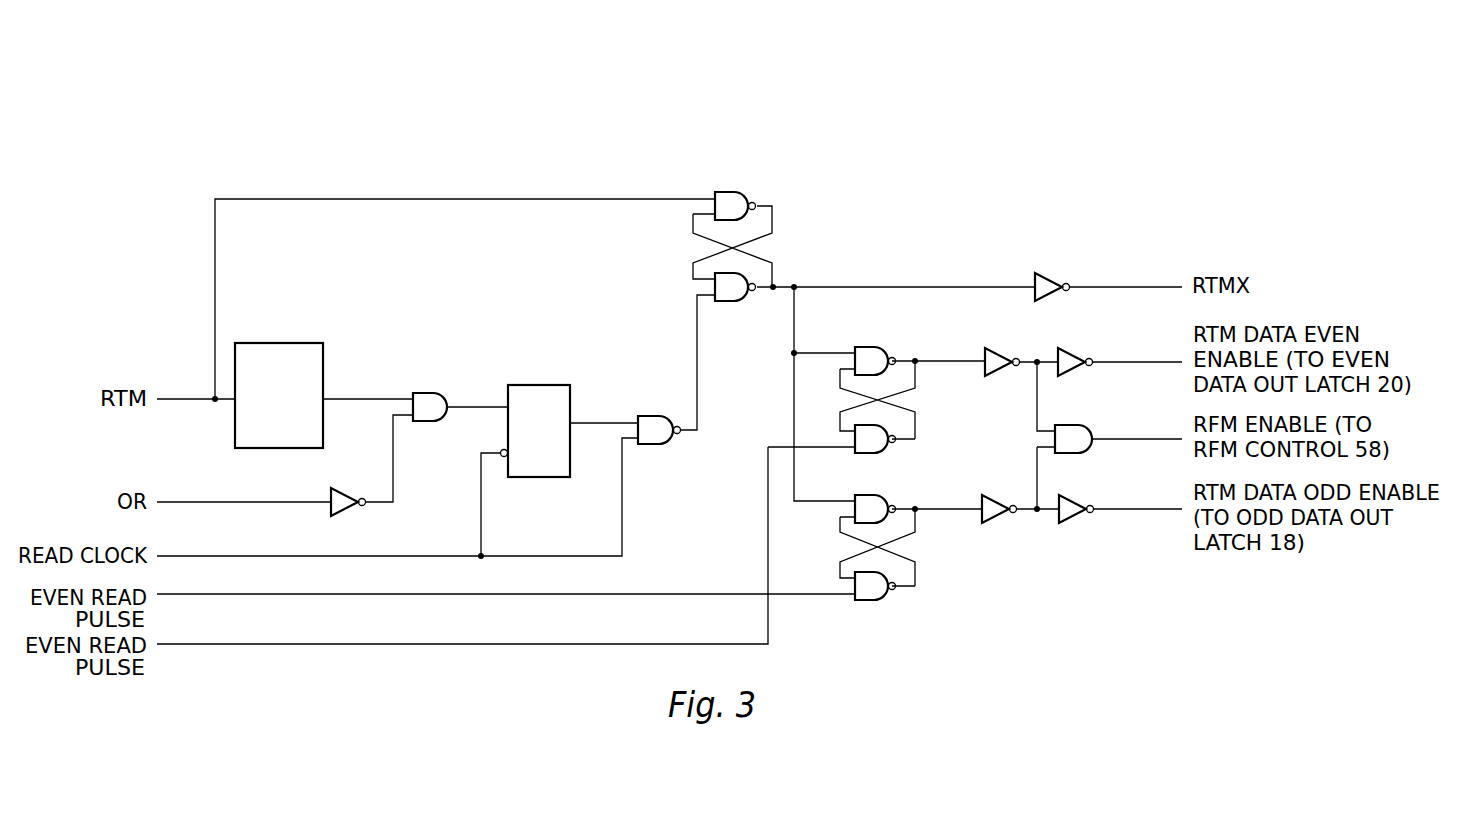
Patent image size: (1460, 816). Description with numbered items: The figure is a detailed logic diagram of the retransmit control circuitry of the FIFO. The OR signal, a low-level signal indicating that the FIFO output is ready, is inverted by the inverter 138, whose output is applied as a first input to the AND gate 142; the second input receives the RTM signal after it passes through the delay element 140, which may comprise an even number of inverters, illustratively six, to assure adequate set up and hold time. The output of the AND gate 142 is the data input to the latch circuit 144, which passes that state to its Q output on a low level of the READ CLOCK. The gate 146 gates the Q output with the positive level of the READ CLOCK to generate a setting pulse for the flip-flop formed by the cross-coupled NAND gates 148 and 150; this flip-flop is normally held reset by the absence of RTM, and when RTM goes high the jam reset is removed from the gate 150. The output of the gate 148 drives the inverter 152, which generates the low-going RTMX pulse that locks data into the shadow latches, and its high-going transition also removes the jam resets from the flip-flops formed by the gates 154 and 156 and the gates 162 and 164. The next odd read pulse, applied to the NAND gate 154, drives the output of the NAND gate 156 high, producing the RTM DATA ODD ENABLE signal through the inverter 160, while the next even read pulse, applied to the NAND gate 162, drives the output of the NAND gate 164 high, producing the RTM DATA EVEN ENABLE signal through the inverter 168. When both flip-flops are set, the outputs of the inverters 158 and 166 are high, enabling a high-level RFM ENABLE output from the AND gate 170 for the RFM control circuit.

The inverter 138 is at (345, 490).
The delay element 140 is at (283, 343).
The AND gate 142 is at (430, 397).
The latch circuit 144 is at (552, 385).
The gate 146 is at (650, 403).
The NAND gate 148 is at (730, 301).
The NAND gate 150 is at (735, 198).
The inverter 152 is at (1045, 275).
The NAND gate 154 is at (870, 600).
The NAND gate 156 is at (868, 495).
The inverter 158 is at (997, 522).
The inverter 160 is at (1075, 501).
The NAND gate 162 is at (880, 453).
The NAND gate 164 is at (875, 352).
The inverter 166 is at (1015, 340).
The inverter 168 is at (1070, 352).
The AND gate 170 is at (1072, 425).